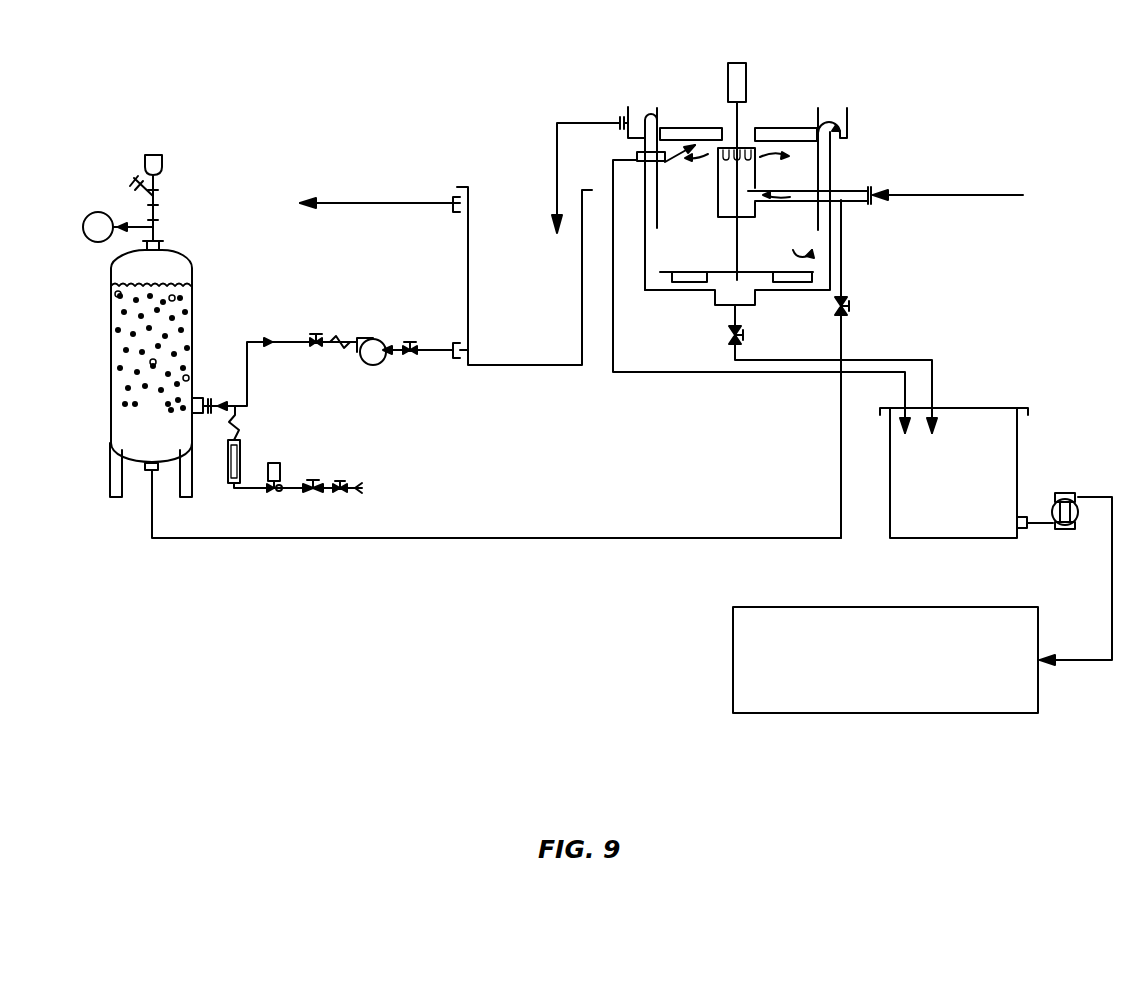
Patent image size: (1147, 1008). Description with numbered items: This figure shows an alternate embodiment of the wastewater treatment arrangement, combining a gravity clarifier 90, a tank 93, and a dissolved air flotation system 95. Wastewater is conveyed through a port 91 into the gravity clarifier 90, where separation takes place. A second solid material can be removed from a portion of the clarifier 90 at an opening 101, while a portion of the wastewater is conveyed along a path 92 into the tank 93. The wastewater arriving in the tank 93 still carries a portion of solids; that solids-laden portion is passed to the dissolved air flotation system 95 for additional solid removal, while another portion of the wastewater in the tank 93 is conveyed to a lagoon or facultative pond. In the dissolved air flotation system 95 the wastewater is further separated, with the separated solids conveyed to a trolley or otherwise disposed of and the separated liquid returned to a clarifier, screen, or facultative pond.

The gravity clarifier 90 is at (838, 82).
The port 91 is at (935, 195).
The path 92 is at (583, 123).
The tank 93 is at (520, 367).
The dissolved air flotation system 95 is at (112, 362).
The opening 101 is at (738, 317).